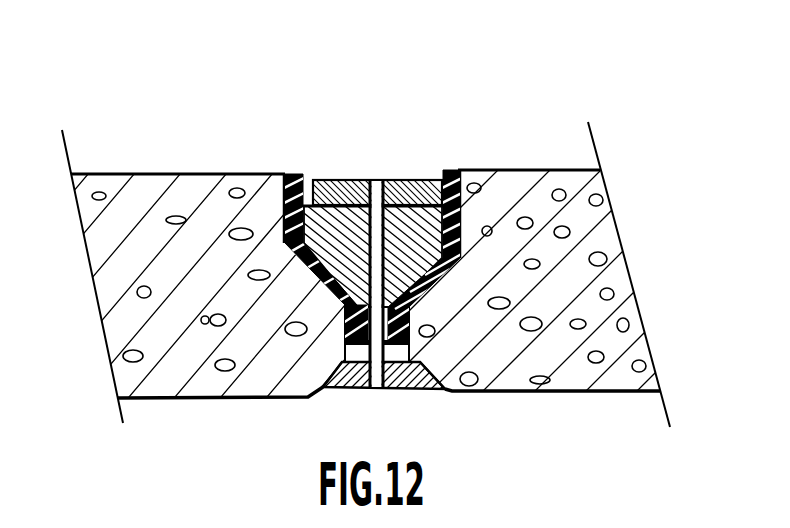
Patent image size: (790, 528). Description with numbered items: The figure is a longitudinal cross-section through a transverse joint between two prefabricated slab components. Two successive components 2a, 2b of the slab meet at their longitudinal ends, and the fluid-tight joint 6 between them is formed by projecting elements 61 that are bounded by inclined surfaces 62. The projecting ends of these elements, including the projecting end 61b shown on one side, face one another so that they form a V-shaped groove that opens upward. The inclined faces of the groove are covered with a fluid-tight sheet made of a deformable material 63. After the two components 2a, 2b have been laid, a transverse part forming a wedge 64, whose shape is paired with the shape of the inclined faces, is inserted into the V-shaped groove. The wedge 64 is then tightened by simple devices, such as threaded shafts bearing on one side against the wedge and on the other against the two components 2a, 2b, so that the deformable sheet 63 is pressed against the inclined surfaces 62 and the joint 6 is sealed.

The slab component 2a is at (127, 174).
The slab component 2b is at (545, 213).
The transverse fluid-tight joint 6 is at (351, 234).
The projecting element 61 is at (305, 311).
The projecting end 61b is at (497, 253).
The inclined surface 62 is at (272, 275).
The fluid-tight sheet 63 is at (294, 177).
The wedge 64 is at (400, 227).